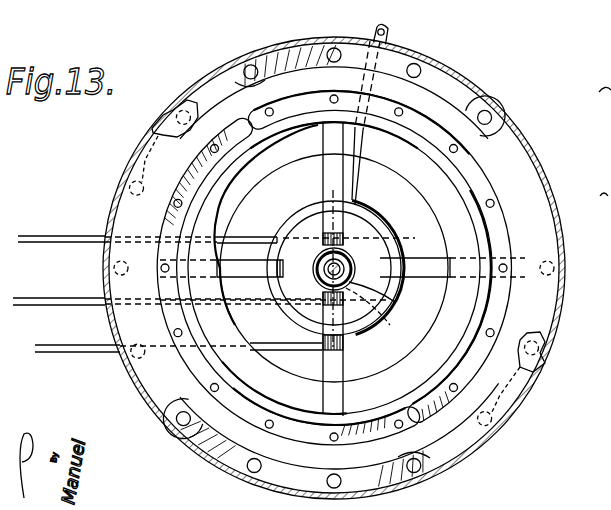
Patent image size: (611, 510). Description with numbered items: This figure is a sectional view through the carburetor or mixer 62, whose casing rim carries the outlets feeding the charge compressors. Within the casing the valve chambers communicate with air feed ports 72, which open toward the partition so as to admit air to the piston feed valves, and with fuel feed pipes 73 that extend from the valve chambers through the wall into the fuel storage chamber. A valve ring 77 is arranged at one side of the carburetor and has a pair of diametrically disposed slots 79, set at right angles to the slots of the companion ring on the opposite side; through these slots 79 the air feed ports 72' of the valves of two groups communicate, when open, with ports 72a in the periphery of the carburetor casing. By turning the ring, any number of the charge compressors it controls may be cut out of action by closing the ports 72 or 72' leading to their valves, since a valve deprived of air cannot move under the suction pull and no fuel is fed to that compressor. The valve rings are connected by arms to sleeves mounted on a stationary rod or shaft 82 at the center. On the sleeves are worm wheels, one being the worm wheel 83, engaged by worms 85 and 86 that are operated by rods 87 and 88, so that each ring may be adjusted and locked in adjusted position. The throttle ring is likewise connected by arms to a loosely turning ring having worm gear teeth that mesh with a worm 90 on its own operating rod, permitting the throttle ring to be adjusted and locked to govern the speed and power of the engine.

The carburetor or mixer 62 is at (567, 297).
The air feed ports 72 is at (333, 268).
The air feed ports 72' is at (317, 263).
The ports in the periphery of the carburetor casing 72a is at (547, 177).
The fuel feed pipes 73 is at (456, 148).
The valve ring 77 is at (214, 90).
The slots 79 is at (478, 97).
The stationary rod or shaft 82 is at (330, 273).
The worm wheel 83 is at (393, 298).
The worm 85 is at (385, 323).
The worm 86 is at (389, 237).
The rod 87 is at (60, 298).
The rod 88 is at (80, 238).
The worm 90 is at (88, 337).